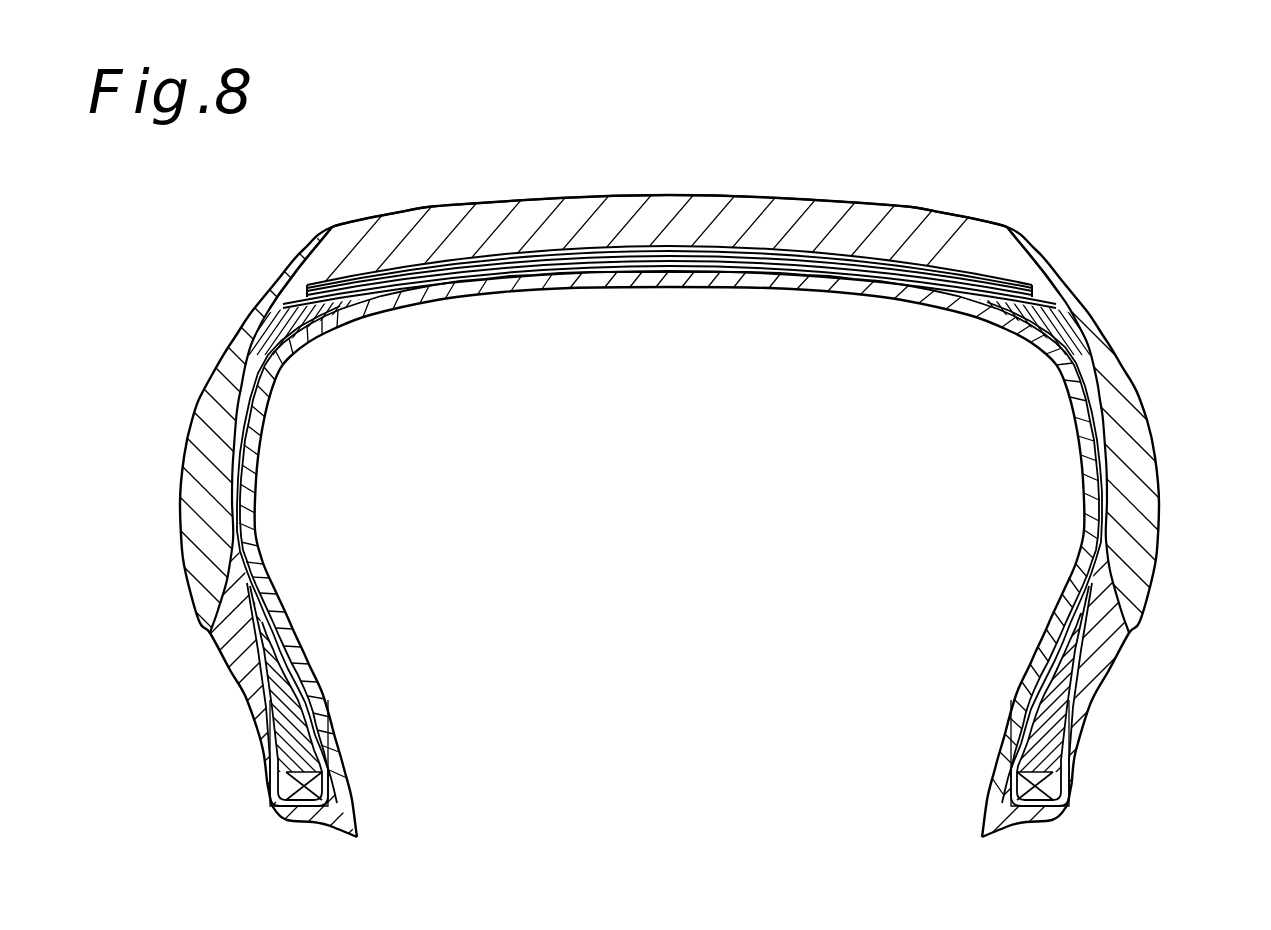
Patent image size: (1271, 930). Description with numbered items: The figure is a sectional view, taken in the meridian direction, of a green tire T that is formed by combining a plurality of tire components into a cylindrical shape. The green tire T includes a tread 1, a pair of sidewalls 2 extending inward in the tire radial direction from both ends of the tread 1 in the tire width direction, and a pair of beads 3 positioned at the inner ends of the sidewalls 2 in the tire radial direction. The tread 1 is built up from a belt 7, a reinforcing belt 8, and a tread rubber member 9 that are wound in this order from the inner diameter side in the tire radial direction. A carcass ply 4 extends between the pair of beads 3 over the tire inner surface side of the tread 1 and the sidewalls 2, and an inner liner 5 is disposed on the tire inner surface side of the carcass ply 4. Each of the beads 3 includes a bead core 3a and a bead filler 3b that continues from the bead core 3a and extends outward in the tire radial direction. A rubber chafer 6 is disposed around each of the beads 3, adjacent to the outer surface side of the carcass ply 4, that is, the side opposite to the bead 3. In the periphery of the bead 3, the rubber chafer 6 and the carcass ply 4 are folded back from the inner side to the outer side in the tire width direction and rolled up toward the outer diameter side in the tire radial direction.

The green tire T is at (806, 181).
The tread 1 is at (408, 206).
The sidewalls 2 is at (258, 293).
The beads 3 is at (427, 704).
The bead core 3a is at (312, 786).
The bead filler 3b is at (300, 708).
The carcass ply 4 is at (1037, 662).
The inner liner 5 is at (677, 288).
The rubber chafer 6 is at (233, 662).
The belt 7 is at (556, 262).
The reinforcing belt 8 is at (713, 248).
The tread rubber member 9 is at (648, 208).